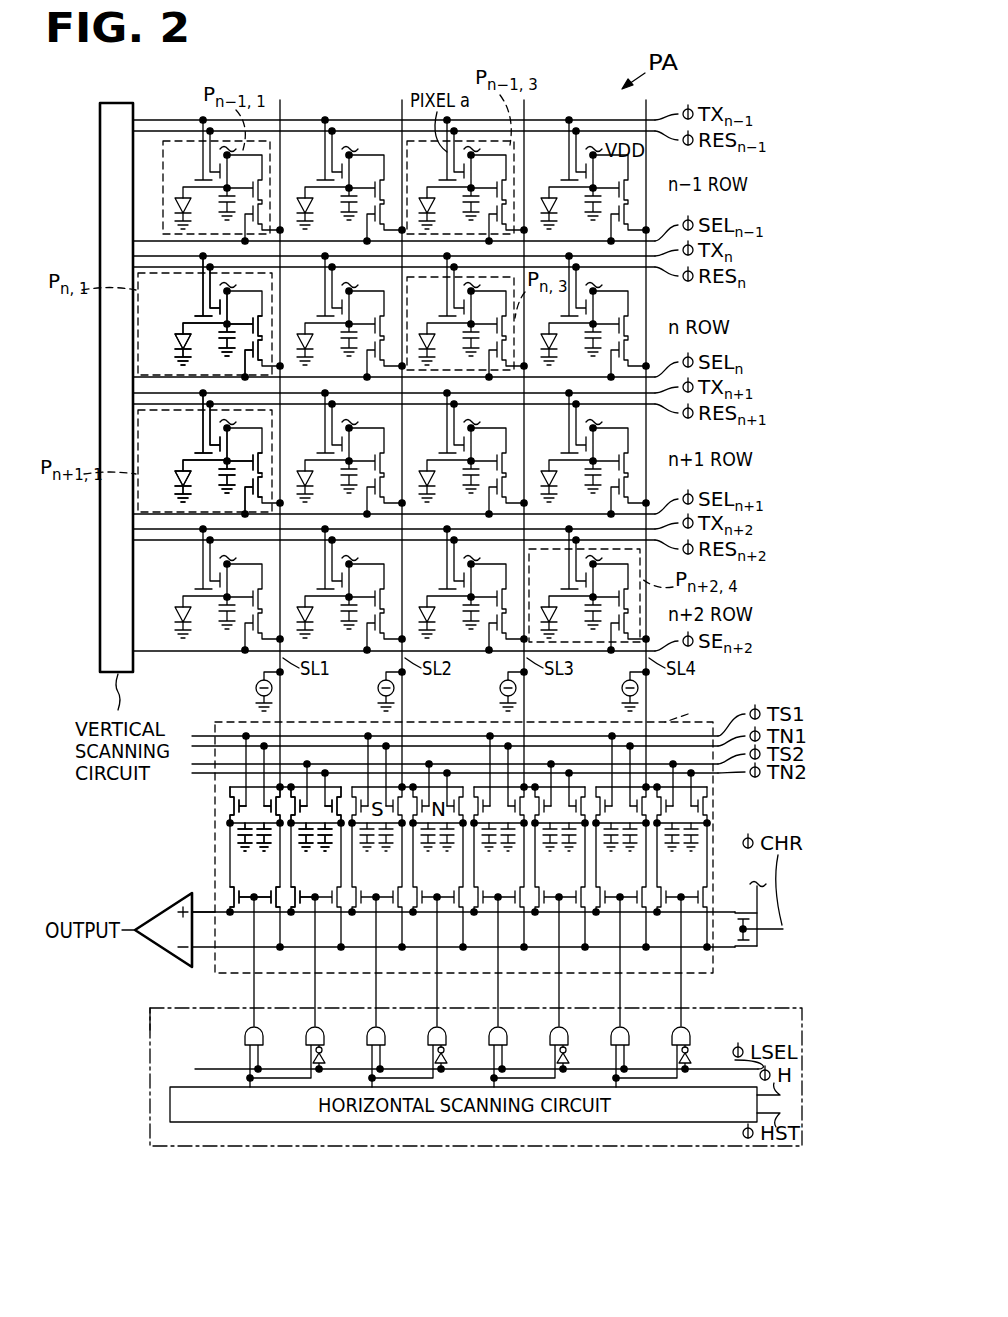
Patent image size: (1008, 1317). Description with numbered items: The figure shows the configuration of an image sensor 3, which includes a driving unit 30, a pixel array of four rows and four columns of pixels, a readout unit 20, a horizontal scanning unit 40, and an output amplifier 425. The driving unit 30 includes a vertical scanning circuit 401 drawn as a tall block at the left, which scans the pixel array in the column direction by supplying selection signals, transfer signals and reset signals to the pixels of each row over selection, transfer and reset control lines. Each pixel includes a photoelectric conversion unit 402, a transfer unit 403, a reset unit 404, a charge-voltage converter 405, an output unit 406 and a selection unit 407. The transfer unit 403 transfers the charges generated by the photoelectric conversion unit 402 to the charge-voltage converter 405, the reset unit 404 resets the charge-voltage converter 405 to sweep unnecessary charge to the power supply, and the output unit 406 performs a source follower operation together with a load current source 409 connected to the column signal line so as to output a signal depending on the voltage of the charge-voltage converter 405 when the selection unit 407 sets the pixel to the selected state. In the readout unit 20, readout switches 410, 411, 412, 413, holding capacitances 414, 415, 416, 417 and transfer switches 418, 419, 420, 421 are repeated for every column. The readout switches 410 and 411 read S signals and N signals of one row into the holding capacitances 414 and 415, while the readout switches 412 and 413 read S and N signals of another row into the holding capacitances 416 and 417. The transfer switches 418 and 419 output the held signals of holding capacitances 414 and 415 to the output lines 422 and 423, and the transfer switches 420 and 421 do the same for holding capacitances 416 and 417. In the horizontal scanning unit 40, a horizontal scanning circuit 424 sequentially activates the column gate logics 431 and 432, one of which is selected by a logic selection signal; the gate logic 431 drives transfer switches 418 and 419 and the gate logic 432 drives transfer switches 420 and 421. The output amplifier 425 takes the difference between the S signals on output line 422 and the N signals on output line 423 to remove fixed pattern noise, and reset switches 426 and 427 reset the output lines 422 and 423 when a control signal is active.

The image sensor 3 is at (118, 1150).
The readout unit 20 is at (465, 832).
The driving unit 30 is at (148, 92).
The horizontal scanning unit 40 is at (690, 1148).
The vertical scanning circuit 401 is at (100, 129).
The photoelectric conversion unit 402 is at (177, 342).
The transfer unit 403 is at (200, 316).
The reset unit 404 is at (227, 303).
The charge-voltage converter 405 is at (222, 342).
The output unit 406 is at (264, 316).
The selection unit 407 is at (264, 349).
The load current source 409 is at (253, 688).
The readout switch 410 is at (230, 804).
The readout switch 411 is at (278, 800).
The readout switch 412 is at (292, 802).
The readout switch 413 is at (340, 804).
The holding capacitance 414 is at (238, 831).
The holding capacitance 415 is at (272, 842).
The holding capacitance 416 is at (298, 843).
The holding capacitance 417 is at (336, 840).
The transfer switch 418 is at (463, 928).
The transfer switch 419 is at (278, 906).
The transfer switch 420 is at (290, 906).
The transfer switch 421 is at (322, 906).
The output line 422 is at (196, 909).
The output line 423 is at (203, 951).
The horizontal scanning circuit 424 is at (174, 1086).
The output amplifier 425 is at (161, 912).
The reset switch 426 is at (739, 910).
The reset switch 427 is at (741, 945).
The gate logic 431 is at (248, 1028).
The gate logic 432 is at (308, 1028).